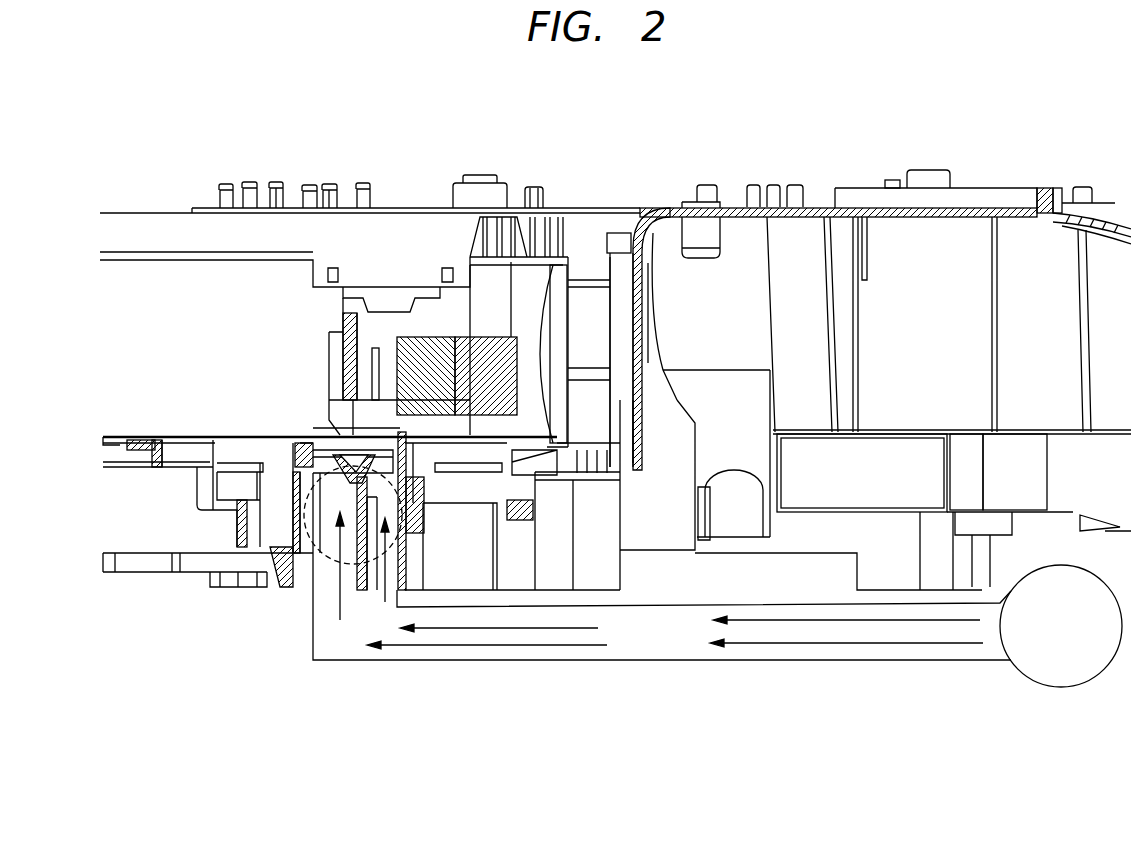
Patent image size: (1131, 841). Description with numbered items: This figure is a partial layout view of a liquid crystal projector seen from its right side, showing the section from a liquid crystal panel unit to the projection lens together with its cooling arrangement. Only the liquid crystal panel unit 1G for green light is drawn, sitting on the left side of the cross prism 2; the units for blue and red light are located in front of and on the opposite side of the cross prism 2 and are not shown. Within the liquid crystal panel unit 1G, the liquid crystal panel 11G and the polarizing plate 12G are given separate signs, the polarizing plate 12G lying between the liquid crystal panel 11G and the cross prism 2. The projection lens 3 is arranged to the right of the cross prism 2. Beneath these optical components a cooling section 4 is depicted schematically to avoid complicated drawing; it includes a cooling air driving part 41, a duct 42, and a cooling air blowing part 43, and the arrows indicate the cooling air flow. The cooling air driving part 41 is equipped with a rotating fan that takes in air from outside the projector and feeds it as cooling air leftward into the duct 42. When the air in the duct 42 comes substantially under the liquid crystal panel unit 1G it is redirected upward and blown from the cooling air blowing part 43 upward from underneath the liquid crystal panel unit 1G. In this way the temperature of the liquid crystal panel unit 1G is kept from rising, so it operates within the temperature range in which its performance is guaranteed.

The liquid crystal panel unit for green light 1G is at (425, 102).
The liquid crystal panel 11G is at (350, 318).
The polarizing plate 12G is at (375, 346).
The cross prism 2 is at (427, 336).
The projection lens 3 is at (593, 310).
The cooling section 4 is at (900, 732).
The cooling air driving part 41 is at (1057, 640).
The duct 42 is at (670, 643).
The cooling air blowing part 43 is at (402, 556).